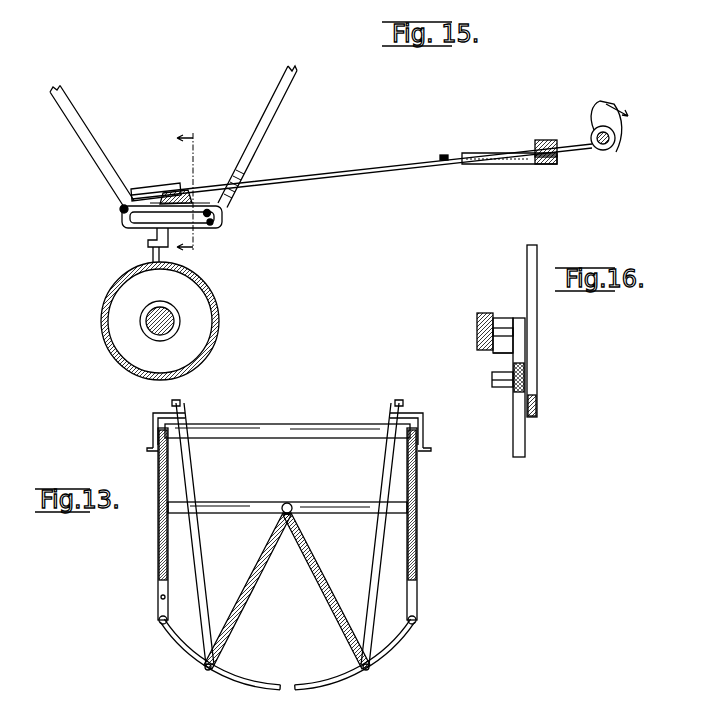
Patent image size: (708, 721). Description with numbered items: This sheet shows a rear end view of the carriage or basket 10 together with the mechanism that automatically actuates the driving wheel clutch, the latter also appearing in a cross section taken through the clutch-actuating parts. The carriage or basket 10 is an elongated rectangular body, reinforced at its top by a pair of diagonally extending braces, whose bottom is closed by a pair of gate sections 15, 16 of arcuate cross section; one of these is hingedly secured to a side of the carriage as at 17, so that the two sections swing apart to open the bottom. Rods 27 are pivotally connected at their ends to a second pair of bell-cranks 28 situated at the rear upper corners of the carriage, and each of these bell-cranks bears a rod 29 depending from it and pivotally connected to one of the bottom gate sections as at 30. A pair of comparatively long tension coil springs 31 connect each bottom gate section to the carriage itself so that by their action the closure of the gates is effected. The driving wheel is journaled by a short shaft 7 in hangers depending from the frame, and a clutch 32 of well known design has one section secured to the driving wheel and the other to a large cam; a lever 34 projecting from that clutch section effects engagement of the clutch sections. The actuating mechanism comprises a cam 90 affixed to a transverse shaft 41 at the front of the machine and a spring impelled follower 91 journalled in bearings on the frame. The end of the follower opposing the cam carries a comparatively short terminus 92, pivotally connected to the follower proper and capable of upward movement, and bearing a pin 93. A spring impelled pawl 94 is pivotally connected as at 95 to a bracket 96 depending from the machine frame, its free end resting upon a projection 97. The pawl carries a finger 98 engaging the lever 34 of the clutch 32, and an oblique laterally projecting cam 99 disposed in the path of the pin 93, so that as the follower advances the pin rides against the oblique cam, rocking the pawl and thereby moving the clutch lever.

In FIG. 15, the short shaft 7 is at (152, 325).
In FIG. 13, the carriage or basket 10 is at (285, 432).
In FIG. 13, the gate section 15 is at (266, 692).
In FIG. 15, the gate section 16 is at (198, 190).
In FIG. 13, the gate section 16 is at (327, 689).
In FIG. 13, the hinge 17 is at (160, 626).
In FIG. 13, the rods 27 is at (147, 448).
In FIG. 13, the bell-cranks 28 is at (153, 412).
In FIG. 13, the rod 29 is at (188, 485).
In FIG. 13, the pivotal connection 30 is at (208, 672).
In FIG. 13, the tension coil springs 31 is at (311, 560).
In FIG. 15, the clutch 32 is at (216, 330).
In FIG. 15, the lever 34 is at (152, 252).
In FIG. 15, the shaft 41 is at (613, 148).
In FIG. 15, the cam 90 is at (600, 110).
In FIG. 15, the spring impelled follower 91 is at (398, 170).
In FIG. 15, the terminus 92 is at (143, 188).
In FIG. 16, the terminus 92 is at (477, 318).
In FIG. 15, the pin 93 is at (182, 190).
In FIG. 16, the pin 93 is at (501, 318).
In FIG. 15, the spring impelled pawl 94 is at (218, 210).
In FIG. 16, the spring impelled pawl 94 is at (517, 393).
In FIG. 15, the pivot 95 is at (122, 210).
In FIG. 16, the pivot 95 is at (492, 380).
In FIG. 15, the bracket 96 is at (100, 173).
In FIG. 16, the bracket 96 is at (537, 383).
In FIG. 15, the projection 97 is at (218, 222).
In FIG. 15, the finger 98 is at (148, 233).
In FIG. 16, the finger 98 is at (525, 432).
In FIG. 15, the oblique cam 99 is at (178, 183).
In FIG. 16, the oblique cam 99 is at (503, 353).